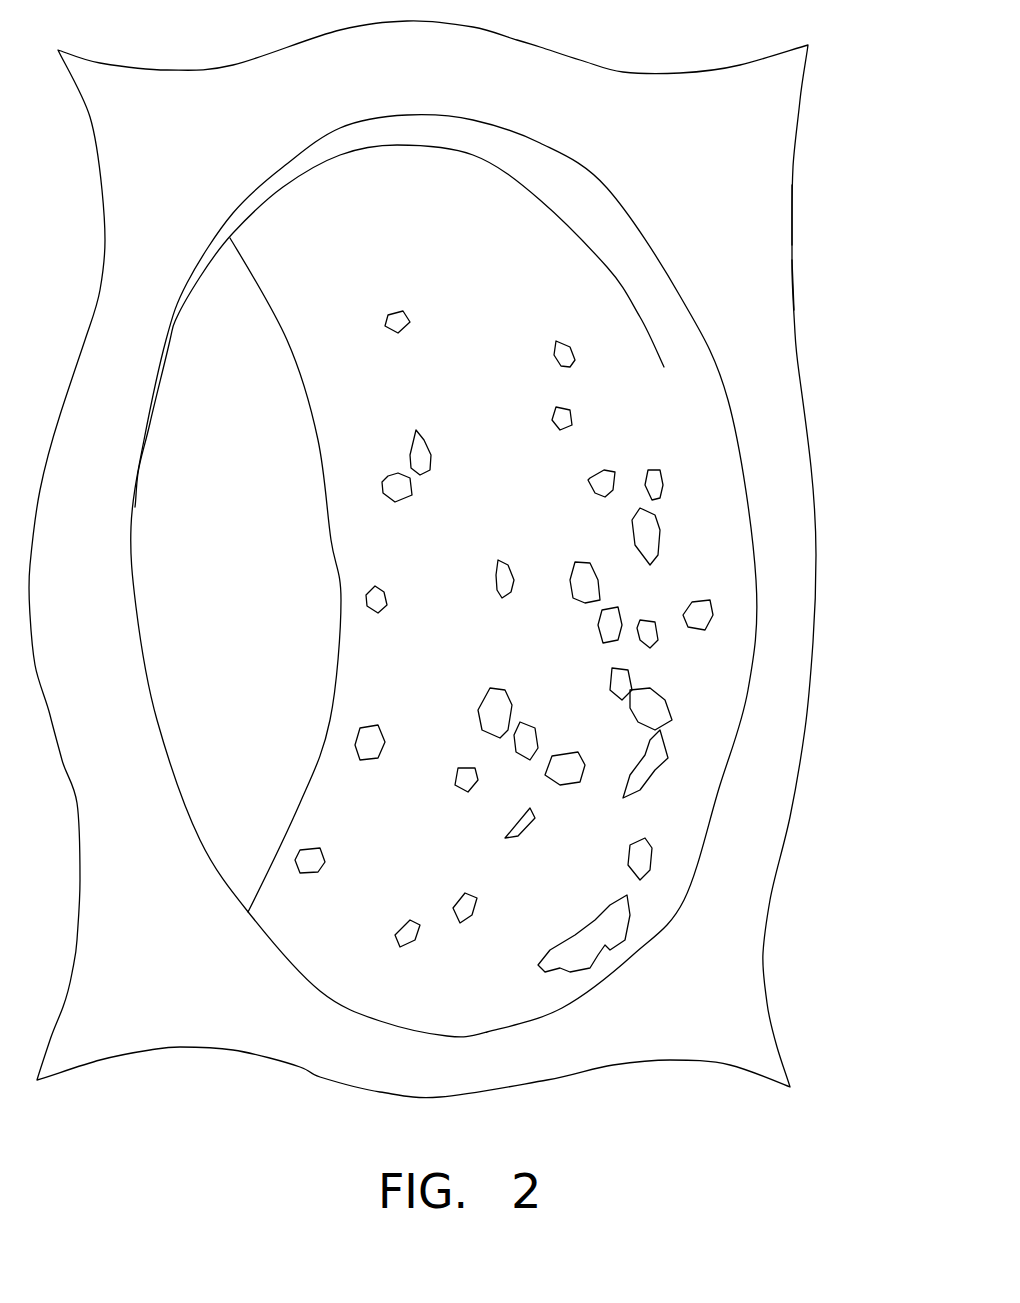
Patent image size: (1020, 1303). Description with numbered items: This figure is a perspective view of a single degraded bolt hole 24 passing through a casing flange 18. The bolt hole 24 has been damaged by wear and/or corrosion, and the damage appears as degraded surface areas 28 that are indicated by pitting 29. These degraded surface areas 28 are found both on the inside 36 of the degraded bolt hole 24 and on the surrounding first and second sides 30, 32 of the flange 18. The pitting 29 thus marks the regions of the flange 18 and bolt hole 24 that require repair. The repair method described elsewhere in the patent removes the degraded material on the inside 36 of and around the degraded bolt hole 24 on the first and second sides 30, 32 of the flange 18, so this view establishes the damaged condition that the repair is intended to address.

The upper casing flange 18 is at (580, 60).
The degraded bolt hole 24 is at (460, 178).
The degraded surface areas 28 is at (662, 193).
The pitting 29 is at (669, 514).
The first side 30 is at (760, 215).
The second side 32 is at (750, 293).
The inside 36 is at (362, 430).